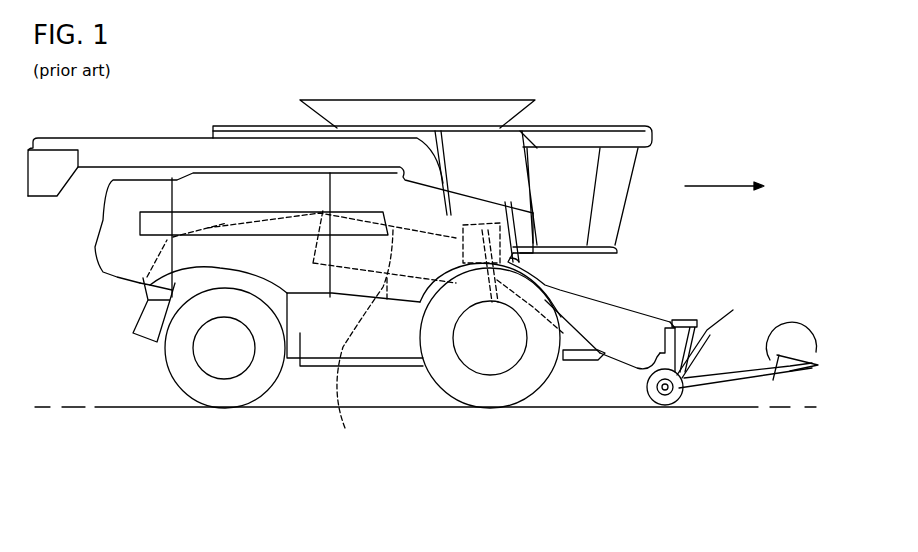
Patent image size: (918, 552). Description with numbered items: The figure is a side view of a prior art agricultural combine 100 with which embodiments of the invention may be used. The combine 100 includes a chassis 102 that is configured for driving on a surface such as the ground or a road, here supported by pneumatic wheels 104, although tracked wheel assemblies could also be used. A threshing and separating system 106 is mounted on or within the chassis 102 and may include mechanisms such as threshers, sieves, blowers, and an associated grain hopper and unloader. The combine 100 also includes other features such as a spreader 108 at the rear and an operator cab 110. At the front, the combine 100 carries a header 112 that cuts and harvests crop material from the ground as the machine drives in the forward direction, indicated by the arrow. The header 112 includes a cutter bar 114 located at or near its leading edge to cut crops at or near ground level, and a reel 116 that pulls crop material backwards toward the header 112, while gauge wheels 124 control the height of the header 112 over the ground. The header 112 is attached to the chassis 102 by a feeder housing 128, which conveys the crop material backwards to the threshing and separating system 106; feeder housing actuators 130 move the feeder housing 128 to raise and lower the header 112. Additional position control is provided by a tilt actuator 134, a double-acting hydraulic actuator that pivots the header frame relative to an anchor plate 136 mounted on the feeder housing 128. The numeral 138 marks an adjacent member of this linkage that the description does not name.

The agricultural combine 100 is at (682, 115).
The chassis 102 is at (300, 338).
The pneumatic wheels 104 is at (460, 380).
The threshing and separating system 106 is at (364, 344).
The spreader 108 is at (140, 318).
The operator cab 110 is at (582, 160).
The header 112 is at (735, 362).
The cutter bar 114 is at (775, 377).
The reel 116 is at (782, 326).
The gauge wheels 124 is at (648, 387).
The feeder housing 128 is at (622, 345).
The feeder housing actuators 130 is at (567, 357).
The tilt actuator 134 is at (676, 323).
The anchor plate 136 is at (662, 330).
The strut 138 is at (697, 358).